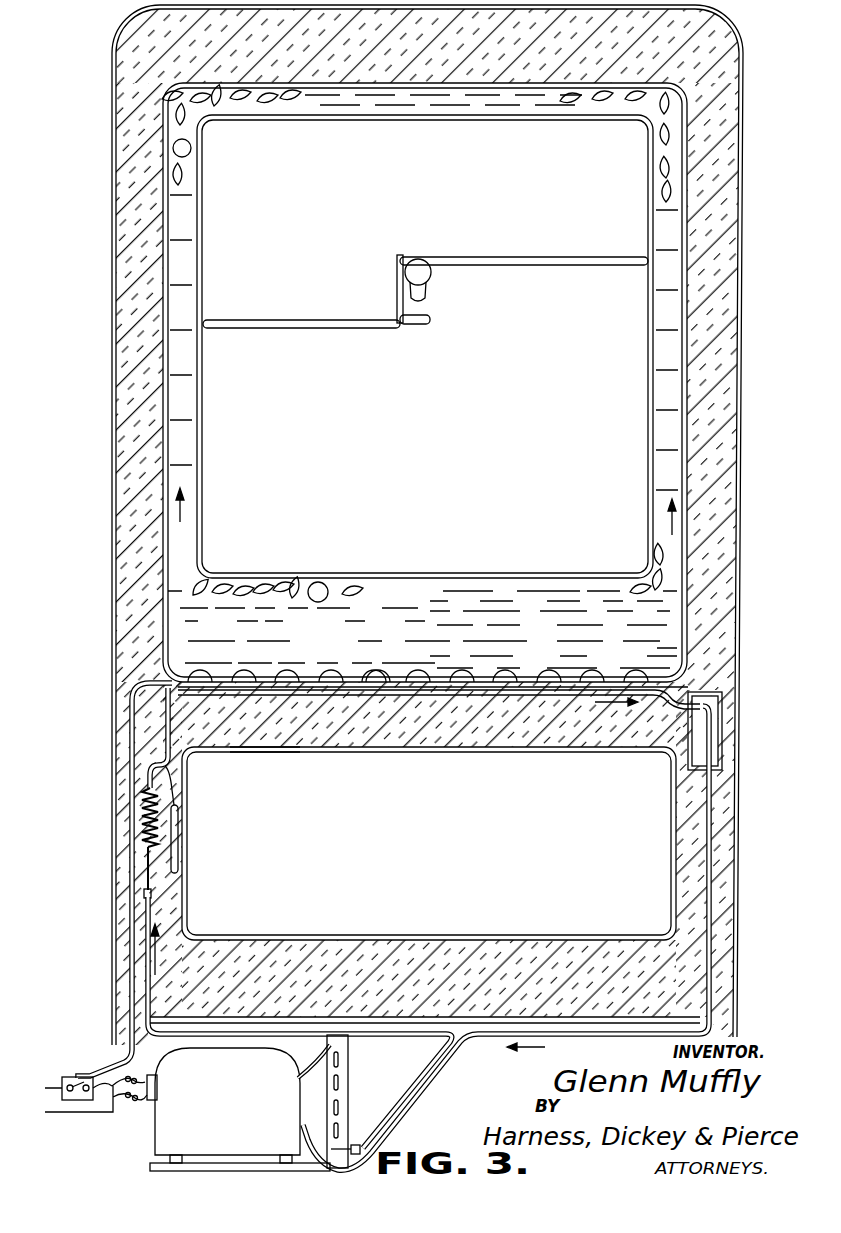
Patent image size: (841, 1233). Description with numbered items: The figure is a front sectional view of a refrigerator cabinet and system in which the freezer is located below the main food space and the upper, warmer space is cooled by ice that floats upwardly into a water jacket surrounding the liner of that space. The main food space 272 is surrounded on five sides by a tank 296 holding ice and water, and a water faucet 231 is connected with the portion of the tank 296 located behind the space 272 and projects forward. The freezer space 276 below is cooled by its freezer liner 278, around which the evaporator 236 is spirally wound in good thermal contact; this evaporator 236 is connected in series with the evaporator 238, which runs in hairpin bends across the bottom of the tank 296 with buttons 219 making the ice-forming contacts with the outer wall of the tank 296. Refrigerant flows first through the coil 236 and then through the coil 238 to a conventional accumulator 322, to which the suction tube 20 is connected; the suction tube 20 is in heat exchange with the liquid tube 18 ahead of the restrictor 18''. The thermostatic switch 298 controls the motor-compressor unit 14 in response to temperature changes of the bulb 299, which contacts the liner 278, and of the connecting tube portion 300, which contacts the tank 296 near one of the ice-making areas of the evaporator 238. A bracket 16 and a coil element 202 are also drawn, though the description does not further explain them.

The motor-compressor unit 14 is at (243, 1109).
The mounting bracket 16 is at (345, 1088).
The liquid tube 18 is at (269, 997).
The restrictor 18'' is at (104, 767).
The suction tube 20 is at (408, 1115).
The cooling coil element 202 is at (379, 674).
The buttons 219 is at (604, 679).
The water faucet 231 is at (430, 280).
The evaporator 236 is at (265, 750).
The evaporator 238 is at (480, 680).
The main food space 272 is at (432, 429).
The freezer space 276 is at (429, 843).
The freezer liner 278 is at (535, 752).
The tank 296 is at (500, 98).
The thermostatic switch 298 is at (74, 1076).
The bulb 299 is at (180, 840).
The connecting tube portion 300 is at (173, 679).
The accumulator 322 is at (722, 703).